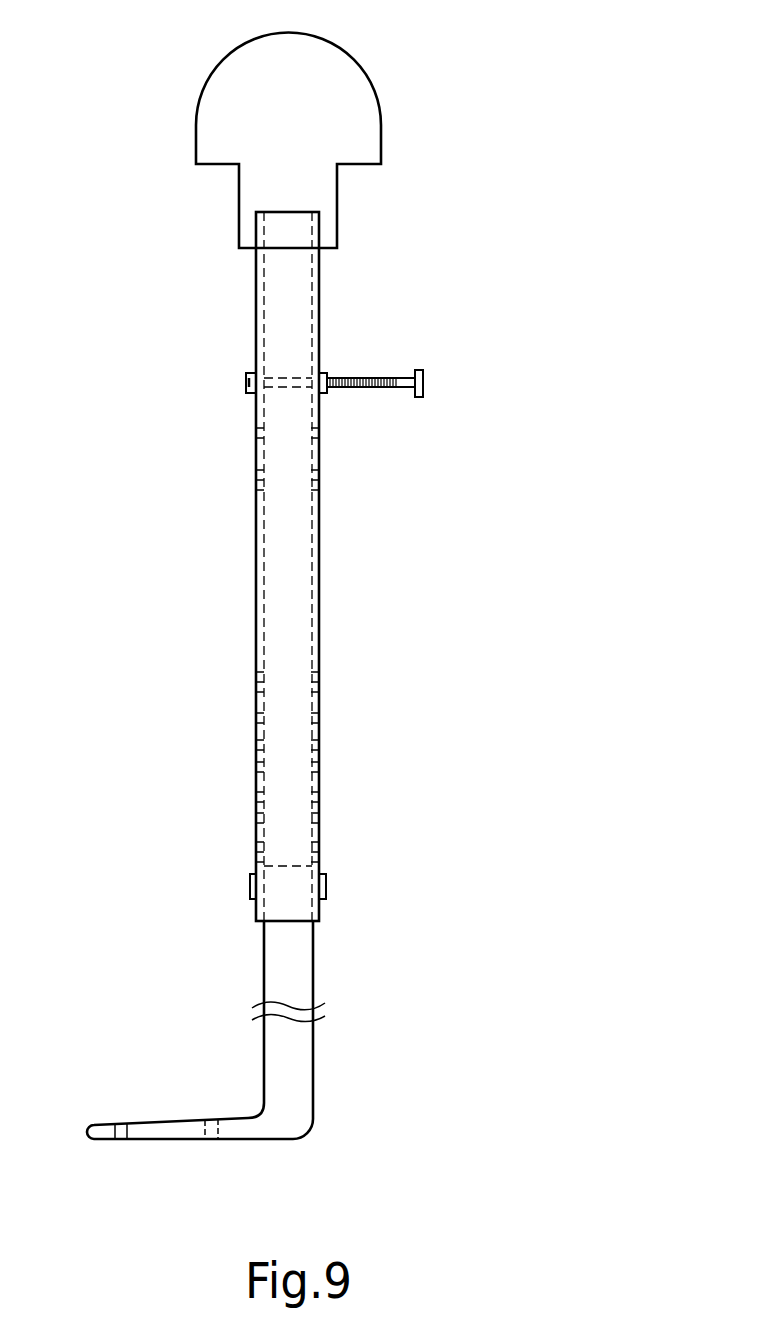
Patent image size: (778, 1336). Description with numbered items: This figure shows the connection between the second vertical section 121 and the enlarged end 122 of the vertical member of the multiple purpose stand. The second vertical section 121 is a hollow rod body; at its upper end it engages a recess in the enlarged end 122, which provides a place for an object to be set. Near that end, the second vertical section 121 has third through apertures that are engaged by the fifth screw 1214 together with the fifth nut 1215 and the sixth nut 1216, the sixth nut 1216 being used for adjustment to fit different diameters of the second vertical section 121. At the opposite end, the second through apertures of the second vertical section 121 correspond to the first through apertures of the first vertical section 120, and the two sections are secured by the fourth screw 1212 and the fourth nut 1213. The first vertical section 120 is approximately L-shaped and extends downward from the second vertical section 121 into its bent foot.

The enlarged end 122 is at (367, 67).
The second vertical section 121 is at (323, 610).
The fifth nut 1215 is at (247, 371).
The sixth nut 1216 is at (333, 368).
The fifth screw 1214 is at (428, 380).
The fourth nut 1213 is at (248, 886).
The fourth screw 1212 is at (329, 886).
The first vertical section 120 is at (319, 983).